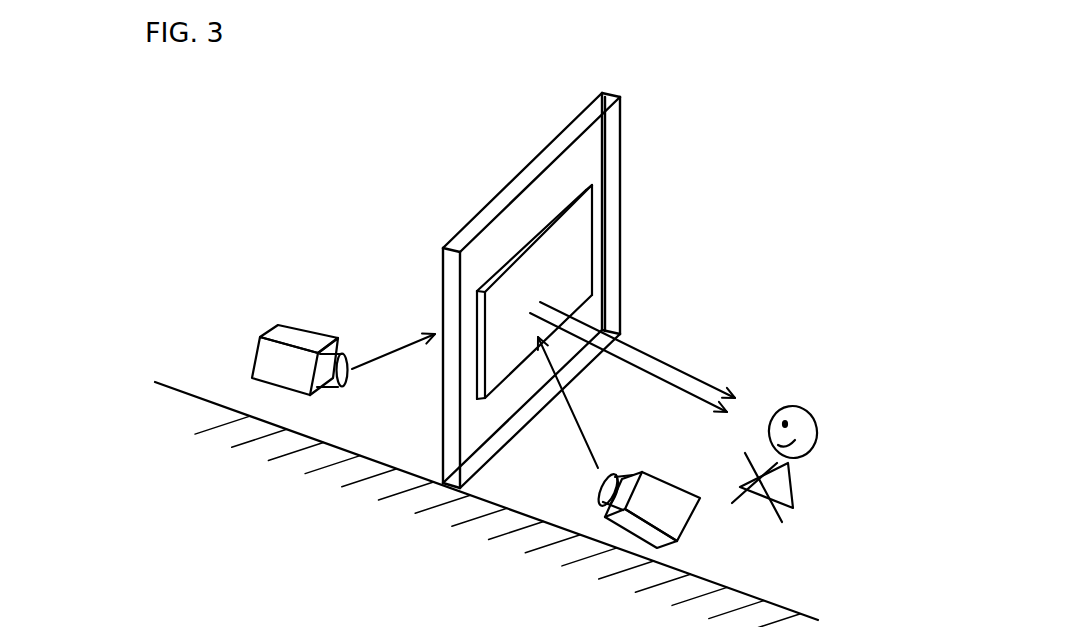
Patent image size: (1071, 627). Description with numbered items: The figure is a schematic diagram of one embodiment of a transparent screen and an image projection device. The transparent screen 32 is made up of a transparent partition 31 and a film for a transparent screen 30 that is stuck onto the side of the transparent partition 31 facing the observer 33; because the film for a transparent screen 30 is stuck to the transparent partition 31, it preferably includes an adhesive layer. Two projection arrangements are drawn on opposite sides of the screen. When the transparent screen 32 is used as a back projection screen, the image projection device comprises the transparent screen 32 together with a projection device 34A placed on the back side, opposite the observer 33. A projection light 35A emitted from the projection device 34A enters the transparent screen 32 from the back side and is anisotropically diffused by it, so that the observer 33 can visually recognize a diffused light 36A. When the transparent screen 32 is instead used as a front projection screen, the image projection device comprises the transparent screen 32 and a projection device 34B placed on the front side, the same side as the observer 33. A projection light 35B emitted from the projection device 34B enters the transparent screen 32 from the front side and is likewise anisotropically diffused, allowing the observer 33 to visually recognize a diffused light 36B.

The film for a transparent screen 30 is at (580, 282).
The transparent partition 31 is at (583, 150).
The transparent screen 32 is at (610, 290).
The observer 33 is at (800, 477).
The projection device 34A is at (308, 318).
The projection device 34B is at (697, 518).
The projection light 35A is at (393, 367).
The projection light 35B is at (565, 404).
The diffused light 36A is at (637, 350).
The diffused light 36B is at (628, 363).